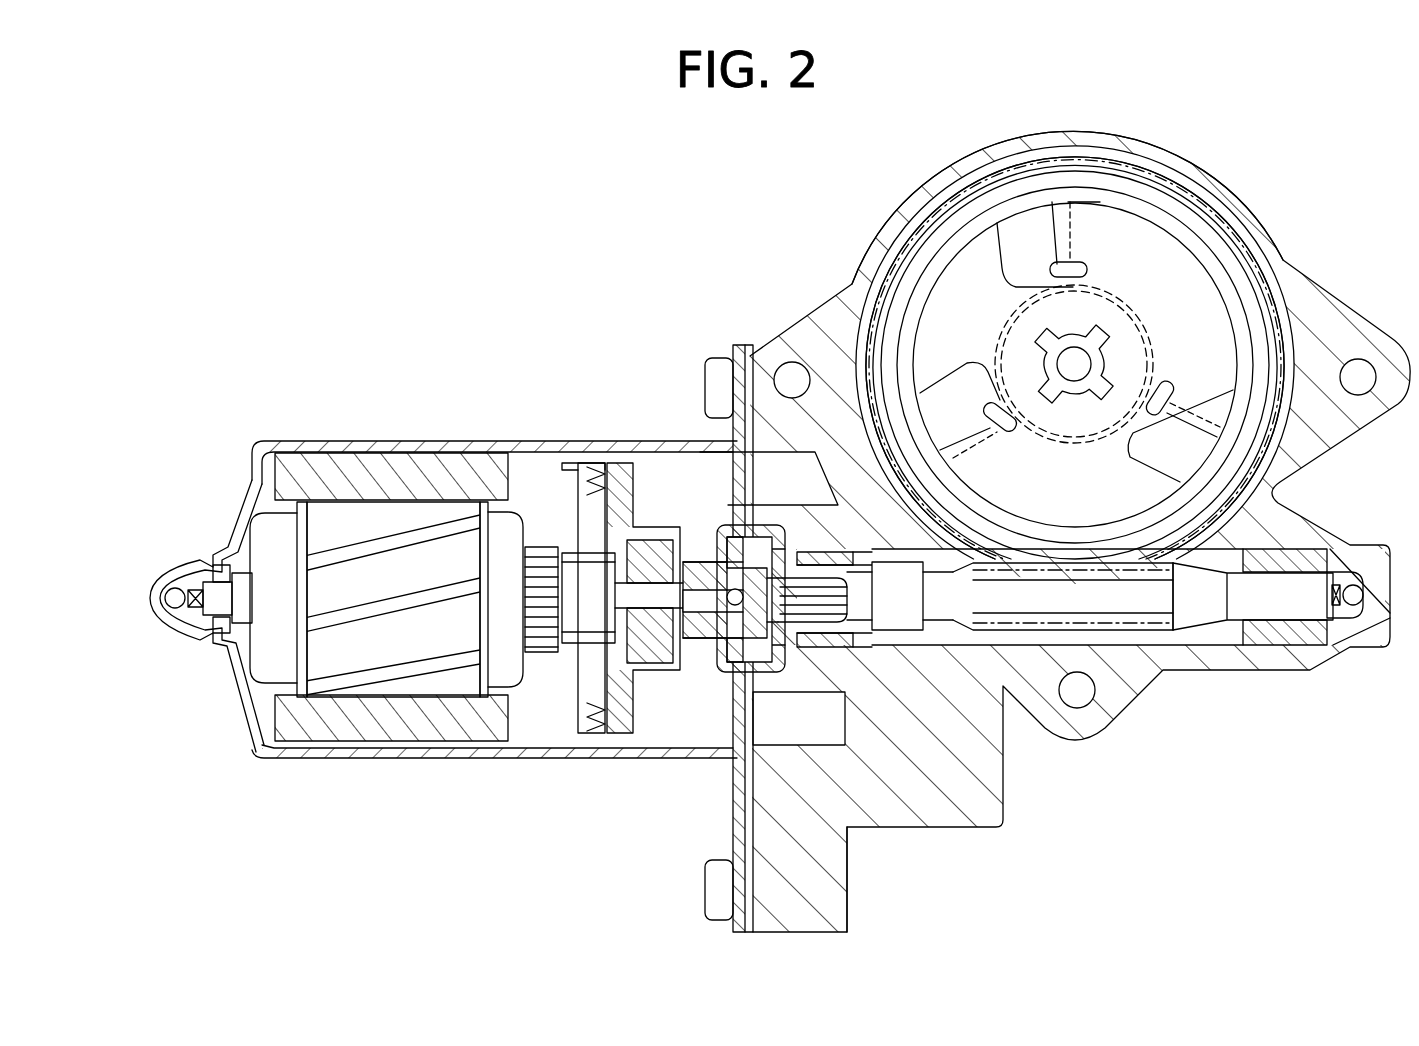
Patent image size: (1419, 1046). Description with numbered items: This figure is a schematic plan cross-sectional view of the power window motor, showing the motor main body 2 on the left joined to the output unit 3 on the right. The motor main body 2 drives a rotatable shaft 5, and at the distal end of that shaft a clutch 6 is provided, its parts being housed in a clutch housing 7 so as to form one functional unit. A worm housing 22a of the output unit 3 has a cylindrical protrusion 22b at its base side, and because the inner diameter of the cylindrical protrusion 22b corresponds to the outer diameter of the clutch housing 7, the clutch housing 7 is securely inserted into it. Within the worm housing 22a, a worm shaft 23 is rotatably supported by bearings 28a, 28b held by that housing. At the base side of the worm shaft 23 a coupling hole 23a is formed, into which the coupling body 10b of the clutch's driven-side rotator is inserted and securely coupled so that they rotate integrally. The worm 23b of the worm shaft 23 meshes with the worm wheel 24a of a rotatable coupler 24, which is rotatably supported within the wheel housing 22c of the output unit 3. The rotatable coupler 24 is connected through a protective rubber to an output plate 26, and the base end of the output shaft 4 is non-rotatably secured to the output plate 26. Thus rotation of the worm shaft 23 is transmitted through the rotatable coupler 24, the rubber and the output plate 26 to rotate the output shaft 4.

The motor main body 2 is at (446, 647).
The output unit 3 is at (1041, 525).
The output shaft 4 is at (1074, 385).
The rotatable shaft 5 is at (632, 603).
The clutch 6 is at (707, 515).
The clutch housing 7 is at (757, 528).
The coupling body 10b is at (827, 597).
The worm housing 22a is at (1277, 657).
The cylindrical protrusion 22b is at (765, 682).
The wheel housing 22c is at (1150, 148).
The worm shaft 23 is at (938, 614).
The coupling hole 23a is at (812, 622).
The worm 23b is at (1117, 630).
The rotatable coupler 24 is at (1235, 263).
The worm wheel 24a is at (916, 213).
The output plate 26 is at (952, 283).
The bearing 28a is at (858, 658).
The bearing 28b is at (1313, 637).